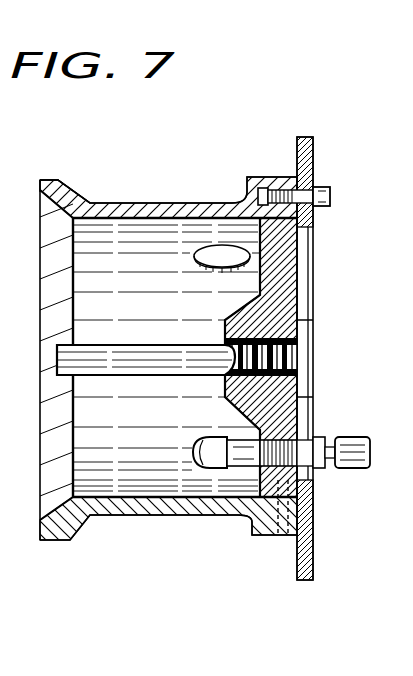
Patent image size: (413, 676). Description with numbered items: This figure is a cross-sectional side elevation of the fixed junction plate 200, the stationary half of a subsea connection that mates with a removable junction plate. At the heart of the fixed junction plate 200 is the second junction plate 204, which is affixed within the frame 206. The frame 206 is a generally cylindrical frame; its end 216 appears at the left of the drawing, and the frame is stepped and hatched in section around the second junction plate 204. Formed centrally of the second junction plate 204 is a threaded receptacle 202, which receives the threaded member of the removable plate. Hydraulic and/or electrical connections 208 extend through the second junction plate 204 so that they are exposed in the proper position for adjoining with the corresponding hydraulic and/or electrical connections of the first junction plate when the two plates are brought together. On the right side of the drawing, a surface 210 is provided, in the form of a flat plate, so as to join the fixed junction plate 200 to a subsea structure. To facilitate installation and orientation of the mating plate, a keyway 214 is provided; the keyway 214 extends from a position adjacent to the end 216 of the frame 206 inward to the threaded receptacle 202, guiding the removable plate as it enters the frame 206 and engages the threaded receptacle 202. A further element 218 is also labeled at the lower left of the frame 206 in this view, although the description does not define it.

The fixed junction plate 200 is at (213, 157).
The threaded receptacle 202 is at (293, 360).
The second junction plate 204 is at (278, 300).
The frame 206 is at (173, 210).
The hydraulic and/or electrical connections 208 is at (313, 478).
The surface 210 is at (315, 557).
The keyway 214 is at (36, 360).
The end 216 is at (40, 182).
The bottom wall 218 is at (148, 495).